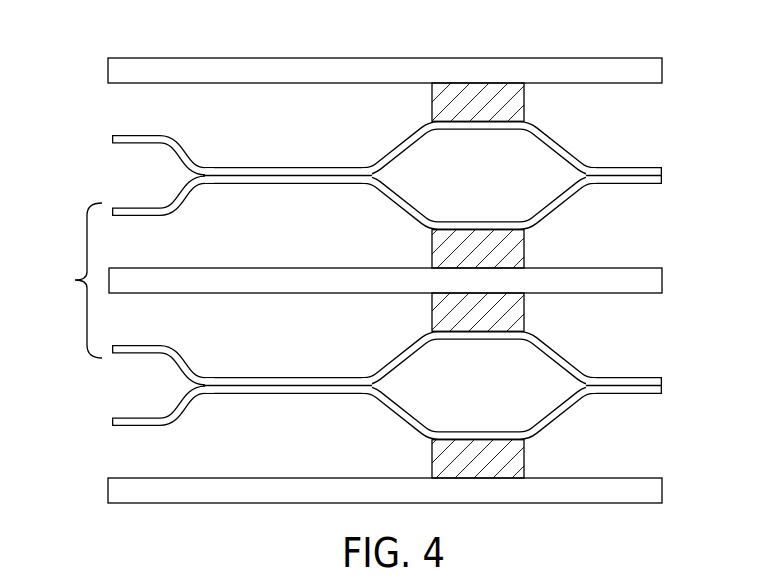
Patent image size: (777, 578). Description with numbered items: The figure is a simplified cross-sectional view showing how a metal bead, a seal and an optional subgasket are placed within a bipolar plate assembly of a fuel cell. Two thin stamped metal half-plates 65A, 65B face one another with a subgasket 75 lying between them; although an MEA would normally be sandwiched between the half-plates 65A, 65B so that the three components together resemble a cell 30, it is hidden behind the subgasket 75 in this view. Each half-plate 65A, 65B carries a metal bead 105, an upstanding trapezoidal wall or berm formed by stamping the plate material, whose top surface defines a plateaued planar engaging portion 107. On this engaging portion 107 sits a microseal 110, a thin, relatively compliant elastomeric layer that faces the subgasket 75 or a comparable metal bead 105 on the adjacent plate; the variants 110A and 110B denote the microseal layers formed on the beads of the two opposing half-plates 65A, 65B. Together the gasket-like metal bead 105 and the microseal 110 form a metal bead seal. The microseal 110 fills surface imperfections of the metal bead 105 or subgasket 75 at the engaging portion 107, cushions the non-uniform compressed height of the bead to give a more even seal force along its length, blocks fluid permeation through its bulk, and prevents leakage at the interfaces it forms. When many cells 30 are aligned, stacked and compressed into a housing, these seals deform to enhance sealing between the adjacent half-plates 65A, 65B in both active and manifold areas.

The cell 30 is at (69, 280).
The half-plate 65A is at (564, 357).
The half-plate 65B is at (387, 166).
The subgasket 75 is at (662, 281).
The metal bead 105 is at (498, 161).
The planar engaging portion 107 is at (543, 122).
The microseal 110 is at (387, 164).
The microseal variant 110A is at (432, 310).
The microseal variant 110B is at (432, 249).